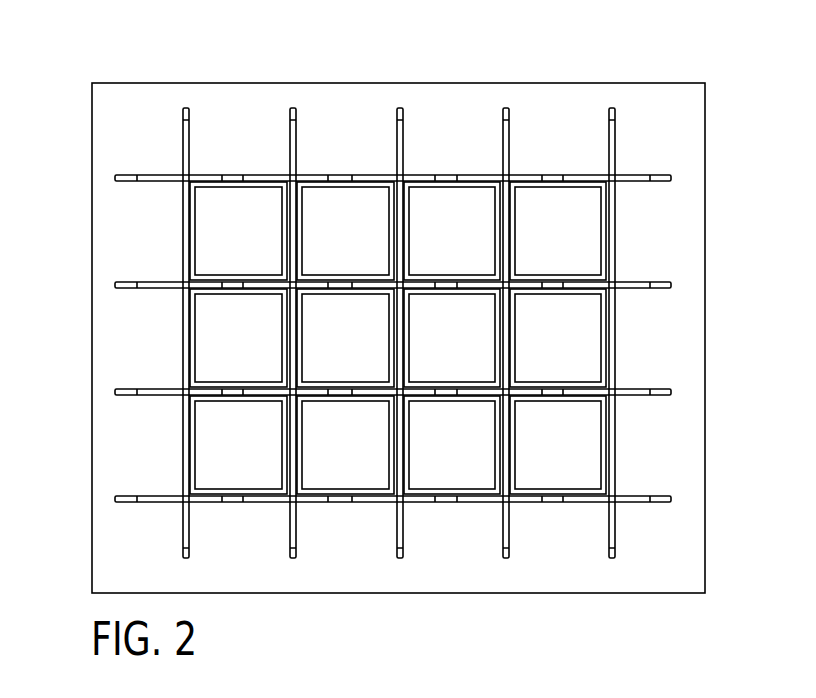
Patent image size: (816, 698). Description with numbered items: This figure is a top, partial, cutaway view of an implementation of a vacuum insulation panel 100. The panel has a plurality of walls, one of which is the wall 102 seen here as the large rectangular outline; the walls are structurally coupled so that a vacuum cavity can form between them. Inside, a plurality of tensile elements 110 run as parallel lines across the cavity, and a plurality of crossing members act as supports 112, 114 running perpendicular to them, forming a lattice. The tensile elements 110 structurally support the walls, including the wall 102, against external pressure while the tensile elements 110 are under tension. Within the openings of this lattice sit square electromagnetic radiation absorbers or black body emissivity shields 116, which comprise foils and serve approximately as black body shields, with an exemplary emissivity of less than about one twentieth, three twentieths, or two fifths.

The vacuum insulation panel 100 is at (641, 65).
The wall 102 is at (357, 100).
The tensile elements 110 is at (180, 147).
The support 112 is at (509, 113).
The support 114 is at (552, 173).
The black body emissivity shields 116 is at (582, 242).